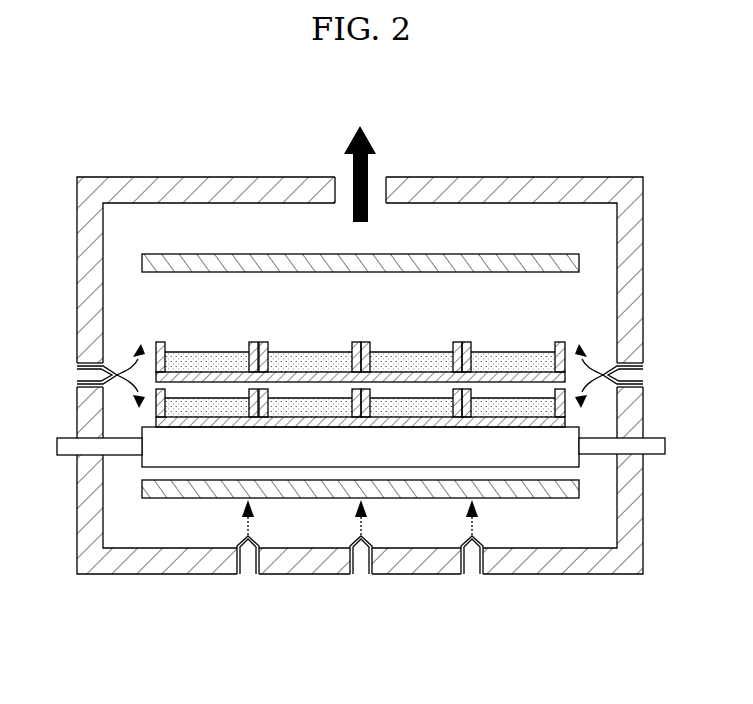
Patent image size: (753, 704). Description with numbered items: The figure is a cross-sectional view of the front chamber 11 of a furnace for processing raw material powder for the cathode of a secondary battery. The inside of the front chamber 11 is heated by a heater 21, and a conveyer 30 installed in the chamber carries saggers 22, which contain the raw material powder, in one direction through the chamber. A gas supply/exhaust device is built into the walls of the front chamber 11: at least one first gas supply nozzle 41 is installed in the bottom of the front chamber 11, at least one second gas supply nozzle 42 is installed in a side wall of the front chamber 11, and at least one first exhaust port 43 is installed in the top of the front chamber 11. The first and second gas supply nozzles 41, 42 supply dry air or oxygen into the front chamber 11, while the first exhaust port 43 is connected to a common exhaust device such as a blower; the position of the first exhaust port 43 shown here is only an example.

The front chamber 11 is at (596, 186).
The heater 21 is at (235, 253).
The saggers 22 is at (469, 336).
The conveyer 30 is at (568, 455).
The first gas supply nozzle 41 is at (360, 556).
The second gas supply nozzle 42 is at (85, 375).
The first exhaust port 43 is at (379, 180).